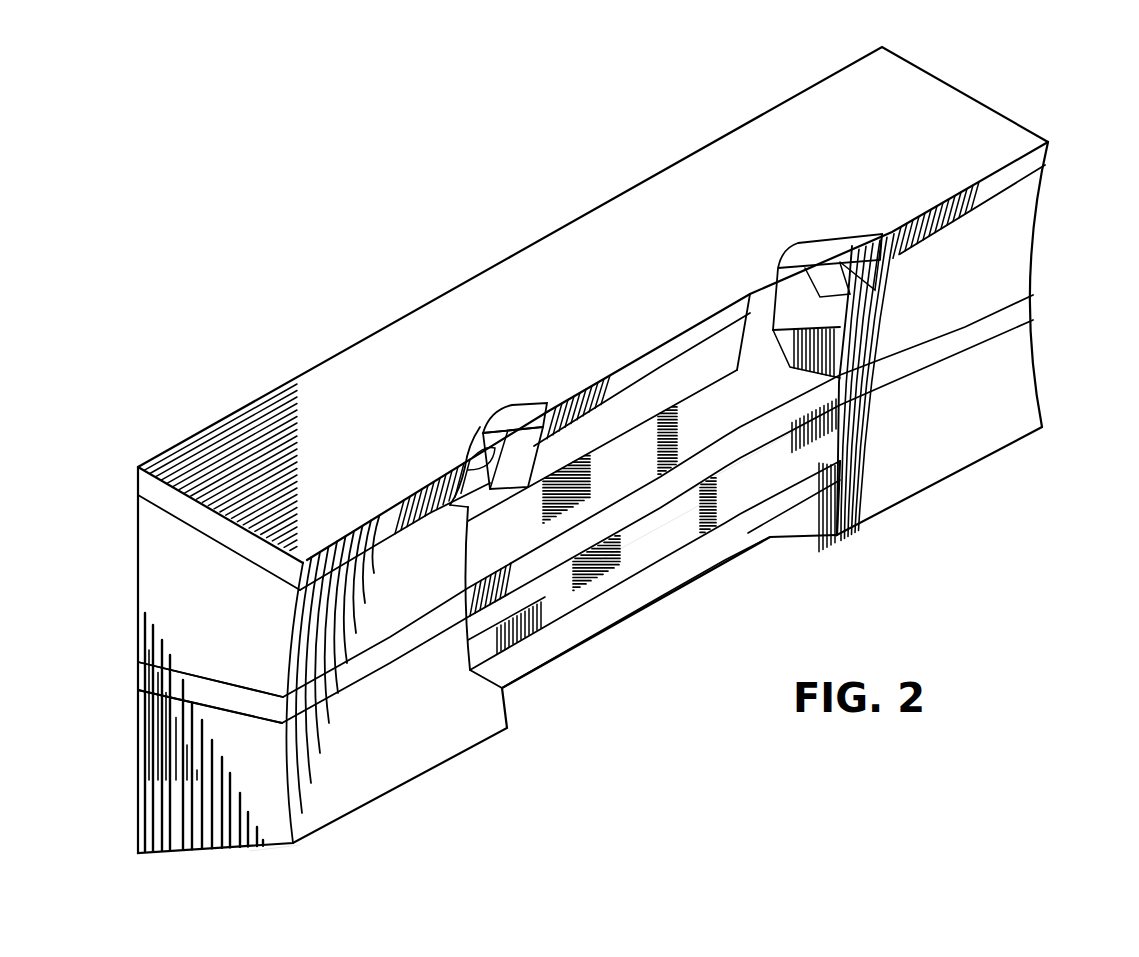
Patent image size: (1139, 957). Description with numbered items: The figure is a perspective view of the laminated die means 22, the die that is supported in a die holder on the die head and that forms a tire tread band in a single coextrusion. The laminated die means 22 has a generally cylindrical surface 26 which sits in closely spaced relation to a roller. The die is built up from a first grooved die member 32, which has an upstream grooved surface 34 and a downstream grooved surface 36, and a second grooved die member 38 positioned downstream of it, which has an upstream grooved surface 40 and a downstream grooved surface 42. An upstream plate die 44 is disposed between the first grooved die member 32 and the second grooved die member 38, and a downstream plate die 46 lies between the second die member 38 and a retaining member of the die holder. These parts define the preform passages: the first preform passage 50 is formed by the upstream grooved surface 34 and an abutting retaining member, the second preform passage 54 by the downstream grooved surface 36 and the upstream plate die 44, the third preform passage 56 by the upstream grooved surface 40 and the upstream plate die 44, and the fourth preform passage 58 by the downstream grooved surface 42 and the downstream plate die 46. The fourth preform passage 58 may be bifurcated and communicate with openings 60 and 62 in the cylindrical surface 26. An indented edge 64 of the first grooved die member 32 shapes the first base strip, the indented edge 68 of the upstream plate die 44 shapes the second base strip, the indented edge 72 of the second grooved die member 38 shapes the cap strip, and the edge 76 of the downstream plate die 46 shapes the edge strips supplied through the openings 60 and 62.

The laminated die means 22 is at (1000, 78).
The cylindrical surface 26 is at (378, 768).
The first grooved die member 32 is at (140, 797).
The upstream grooved surface 34 is at (263, 850).
The downstream grooved surface 36 is at (160, 688).
The second grooved die member 38 is at (140, 596).
The upstream grooved surface 40 is at (193, 677).
The downstream grooved surface 42 is at (171, 505).
The upstream plate die 44 is at (1020, 299).
The downstream plate die 46 is at (1018, 130).
The first preform passage 50 is at (542, 685).
The second preform passage 54 is at (567, 587).
The third preform passage 56 is at (700, 430).
The fourth preform passage 58 is at (463, 500).
The opening 60 is at (873, 260).
The opening 62 is at (457, 522).
The edge 64 is at (667, 585).
The edge 68 is at (523, 573).
The edge 72 is at (673, 373).
The edge 76 is at (493, 437).